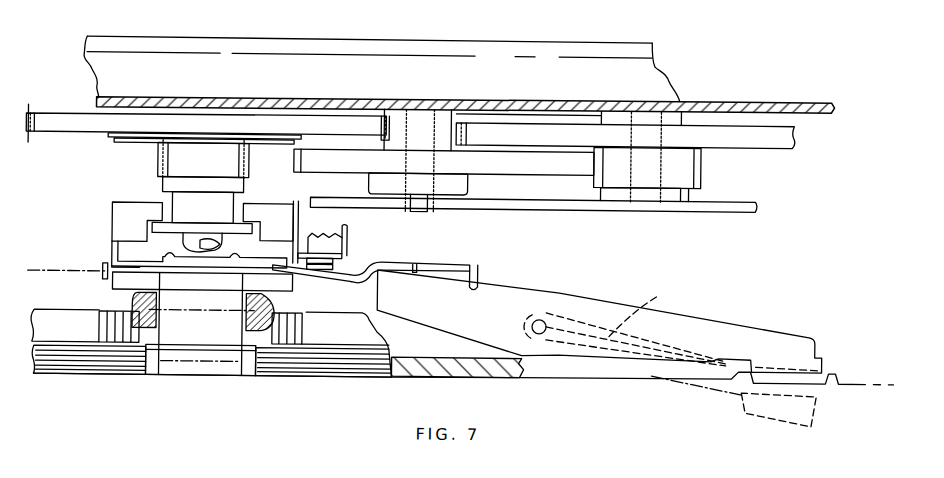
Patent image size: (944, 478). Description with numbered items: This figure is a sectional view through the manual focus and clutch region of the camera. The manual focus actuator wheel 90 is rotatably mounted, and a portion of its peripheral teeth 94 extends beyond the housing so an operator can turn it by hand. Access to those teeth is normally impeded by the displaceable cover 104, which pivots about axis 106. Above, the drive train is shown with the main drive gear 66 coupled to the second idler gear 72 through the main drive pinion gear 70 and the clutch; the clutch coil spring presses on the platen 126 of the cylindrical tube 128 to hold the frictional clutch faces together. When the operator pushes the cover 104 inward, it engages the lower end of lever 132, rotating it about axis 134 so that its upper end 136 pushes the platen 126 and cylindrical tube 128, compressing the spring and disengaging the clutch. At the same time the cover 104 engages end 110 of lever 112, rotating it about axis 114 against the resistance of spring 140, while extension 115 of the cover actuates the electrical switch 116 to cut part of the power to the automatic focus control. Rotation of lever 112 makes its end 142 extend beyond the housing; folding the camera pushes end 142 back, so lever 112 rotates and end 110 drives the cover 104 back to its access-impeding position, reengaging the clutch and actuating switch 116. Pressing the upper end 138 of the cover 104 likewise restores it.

The main drive gear 66 is at (358, 125).
The main drive pinion gear 70 is at (228, 150).
The second idler gear 72 is at (510, 158).
The manual focus actuator wheel 90 is at (118, 362).
The peripheral teeth 94 is at (285, 338).
The displaceable cover 104 is at (271, 358).
The axis 106 is at (113, 302).
The end of lever 110 is at (272, 262).
The lever 112 is at (575, 300).
The axis 114 is at (541, 316).
The extension 115 is at (288, 283).
The electrical switch 116 is at (330, 236).
The platen 126 is at (190, 226).
The cylindrical tube 128 is at (222, 207).
The lever 132 is at (106, 250).
The axis 134 is at (62, 270).
The upper end 136 is at (118, 218).
The upper end of cover 138 is at (175, 369).
The spring 140 is at (660, 290).
The end of lever 142 is at (758, 415).